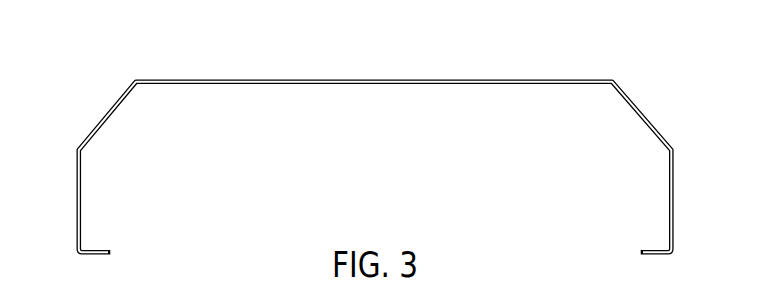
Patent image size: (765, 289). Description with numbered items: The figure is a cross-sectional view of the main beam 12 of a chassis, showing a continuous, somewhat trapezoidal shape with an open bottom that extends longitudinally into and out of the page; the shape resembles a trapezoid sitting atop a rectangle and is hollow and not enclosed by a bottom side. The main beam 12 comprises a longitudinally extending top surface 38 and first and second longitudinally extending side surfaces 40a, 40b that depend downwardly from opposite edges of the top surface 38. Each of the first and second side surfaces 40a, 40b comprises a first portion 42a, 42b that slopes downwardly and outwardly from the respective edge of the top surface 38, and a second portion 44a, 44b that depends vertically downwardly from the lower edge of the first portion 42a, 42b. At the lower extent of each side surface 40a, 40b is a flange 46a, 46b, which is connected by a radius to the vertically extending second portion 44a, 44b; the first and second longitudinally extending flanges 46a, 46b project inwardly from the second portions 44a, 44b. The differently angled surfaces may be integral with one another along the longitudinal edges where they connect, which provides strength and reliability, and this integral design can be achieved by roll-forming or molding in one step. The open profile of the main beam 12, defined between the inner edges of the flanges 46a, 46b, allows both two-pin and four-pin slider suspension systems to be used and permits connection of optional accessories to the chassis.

The main beam 12 is at (505, 63).
The top surface 38 is at (376, 80).
The first portion 42a is at (109, 111).
The first portion 42b is at (645, 115).
The first side surface 40a is at (98, 170).
The second side surface 40b is at (653, 167).
The second portion 44a is at (77, 200).
The second portion 44b is at (675, 200).
The flange 46a is at (97, 252).
The flange 46b is at (655, 252).